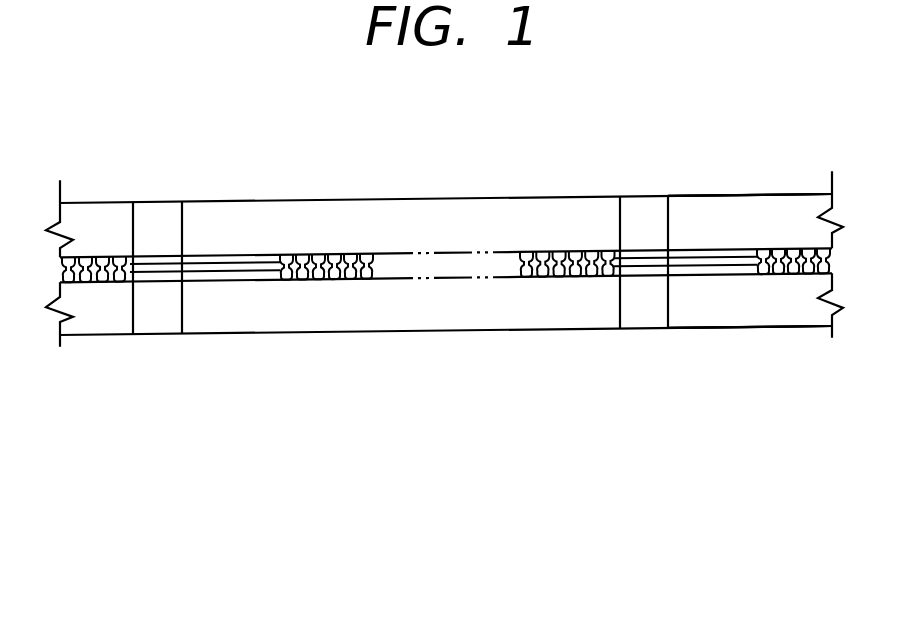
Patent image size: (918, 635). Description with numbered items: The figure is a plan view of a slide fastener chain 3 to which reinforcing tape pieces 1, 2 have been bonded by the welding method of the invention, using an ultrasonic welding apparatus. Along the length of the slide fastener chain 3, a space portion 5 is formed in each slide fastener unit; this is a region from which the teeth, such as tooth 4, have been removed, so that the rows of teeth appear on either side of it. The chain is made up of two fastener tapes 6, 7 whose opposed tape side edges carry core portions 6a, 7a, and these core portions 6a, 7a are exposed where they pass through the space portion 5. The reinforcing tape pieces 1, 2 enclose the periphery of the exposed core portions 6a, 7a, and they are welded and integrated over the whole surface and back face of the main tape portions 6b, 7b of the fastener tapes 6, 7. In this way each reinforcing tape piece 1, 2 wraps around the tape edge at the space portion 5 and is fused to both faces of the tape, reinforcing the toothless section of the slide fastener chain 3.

The reinforcing tape piece 1 is at (157, 222).
The reinforcing tape piece 2 is at (155, 317).
The slide fastener chain 3 is at (467, 161).
The tooth 4 is at (331, 254).
The space portion 5 is at (232, 264).
The fastener tape 6 is at (807, 132).
The core portion 6a is at (714, 214).
The main tape portion 6b is at (787, 215).
The fastener tape 7 is at (810, 389).
The core portion 7a is at (715, 283).
The main tape portion 7b is at (788, 305).